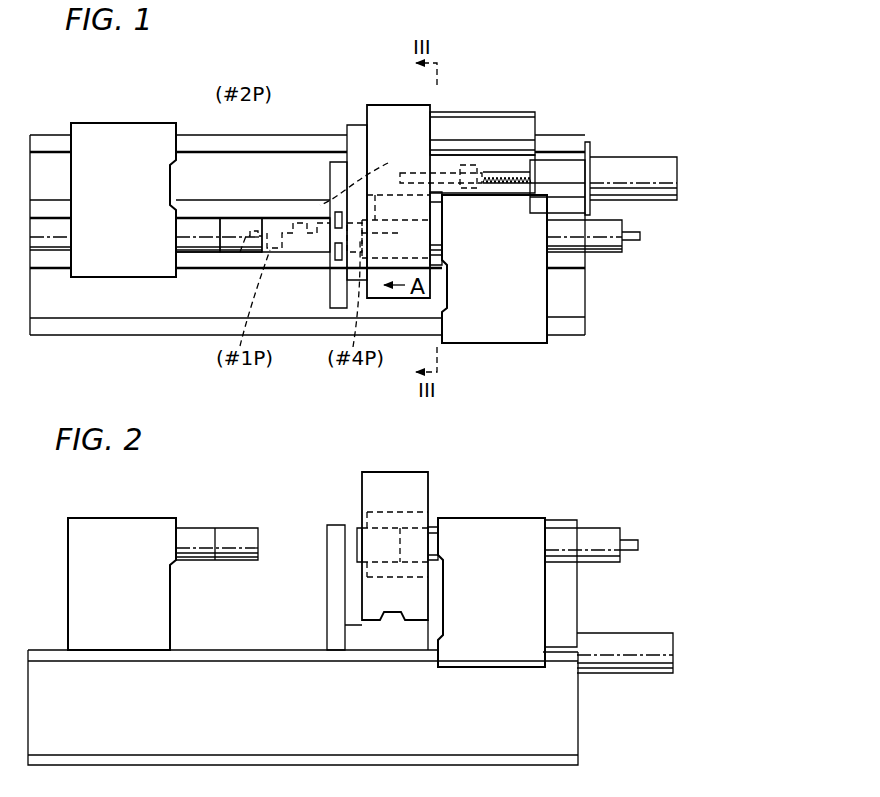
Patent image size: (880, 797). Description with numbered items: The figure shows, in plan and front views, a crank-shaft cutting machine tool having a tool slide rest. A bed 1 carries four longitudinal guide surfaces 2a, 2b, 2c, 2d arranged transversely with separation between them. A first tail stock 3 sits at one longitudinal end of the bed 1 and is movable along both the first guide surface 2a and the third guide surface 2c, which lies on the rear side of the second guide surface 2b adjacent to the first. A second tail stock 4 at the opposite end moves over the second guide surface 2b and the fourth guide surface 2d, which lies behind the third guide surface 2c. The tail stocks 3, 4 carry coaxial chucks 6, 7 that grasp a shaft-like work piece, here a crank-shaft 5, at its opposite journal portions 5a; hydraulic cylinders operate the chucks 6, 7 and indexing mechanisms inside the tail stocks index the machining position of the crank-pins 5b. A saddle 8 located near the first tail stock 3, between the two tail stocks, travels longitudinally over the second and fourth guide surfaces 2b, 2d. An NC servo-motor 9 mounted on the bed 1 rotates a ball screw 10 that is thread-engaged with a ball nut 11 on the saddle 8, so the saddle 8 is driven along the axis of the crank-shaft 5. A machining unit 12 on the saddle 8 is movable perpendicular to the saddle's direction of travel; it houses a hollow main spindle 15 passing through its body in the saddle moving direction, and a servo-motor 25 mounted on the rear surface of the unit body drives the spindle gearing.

In FIG. 1, the bed 1 is at (45, 292).
In FIG. 2, the bed 1 is at (200, 745).
In FIG. 1, the first guide surface 2a is at (572, 342).
In FIG. 2, the first guide surface 2a is at (275, 650).
In FIG. 1, the second guide surface 2b is at (588, 262).
In FIG. 1, the third guide surface 2c is at (231, 207).
In FIG. 1, the fourth guide surface 2d is at (298, 143).
In FIG. 1, the first tail stock 3 is at (508, 338).
In FIG. 2, the first tail stock 3 is at (500, 527).
In FIG. 1, the second tail stock 4 is at (140, 128).
In FIG. 2, the second tail stock 4 is at (162, 526).
In FIG. 1, the crank-shaft 5 is at (281, 262).
In FIG. 1, the journal portions 5a is at (250, 240).
In FIG. 1, the crank-pins 5b is at (297, 217).
In FIG. 1, the chuck 6 is at (443, 238).
In FIG. 2, the chuck 6 is at (357, 528).
In FIG. 1, the chuck 7 is at (203, 242).
In FIG. 2, the chuck 7 is at (245, 533).
In FIG. 1, the saddle 8 is at (357, 123).
In FIG. 2, the saddle 8 is at (395, 640).
In FIG. 1, the NC servo-motor 9 is at (627, 178).
In FIG. 2, the NC servo-motor 9 is at (635, 636).
In FIG. 1, the ball screw 10 is at (512, 170).
In FIG. 1, the ball nut 11 is at (468, 165).
In FIG. 1, the machining unit 12 is at (387, 108).
In FIG. 2, the machining unit 12 is at (396, 476).
In FIG. 2, the hollow main spindle 15 is at (404, 514).
In FIG. 1, the servo-motor 25 is at (450, 125).